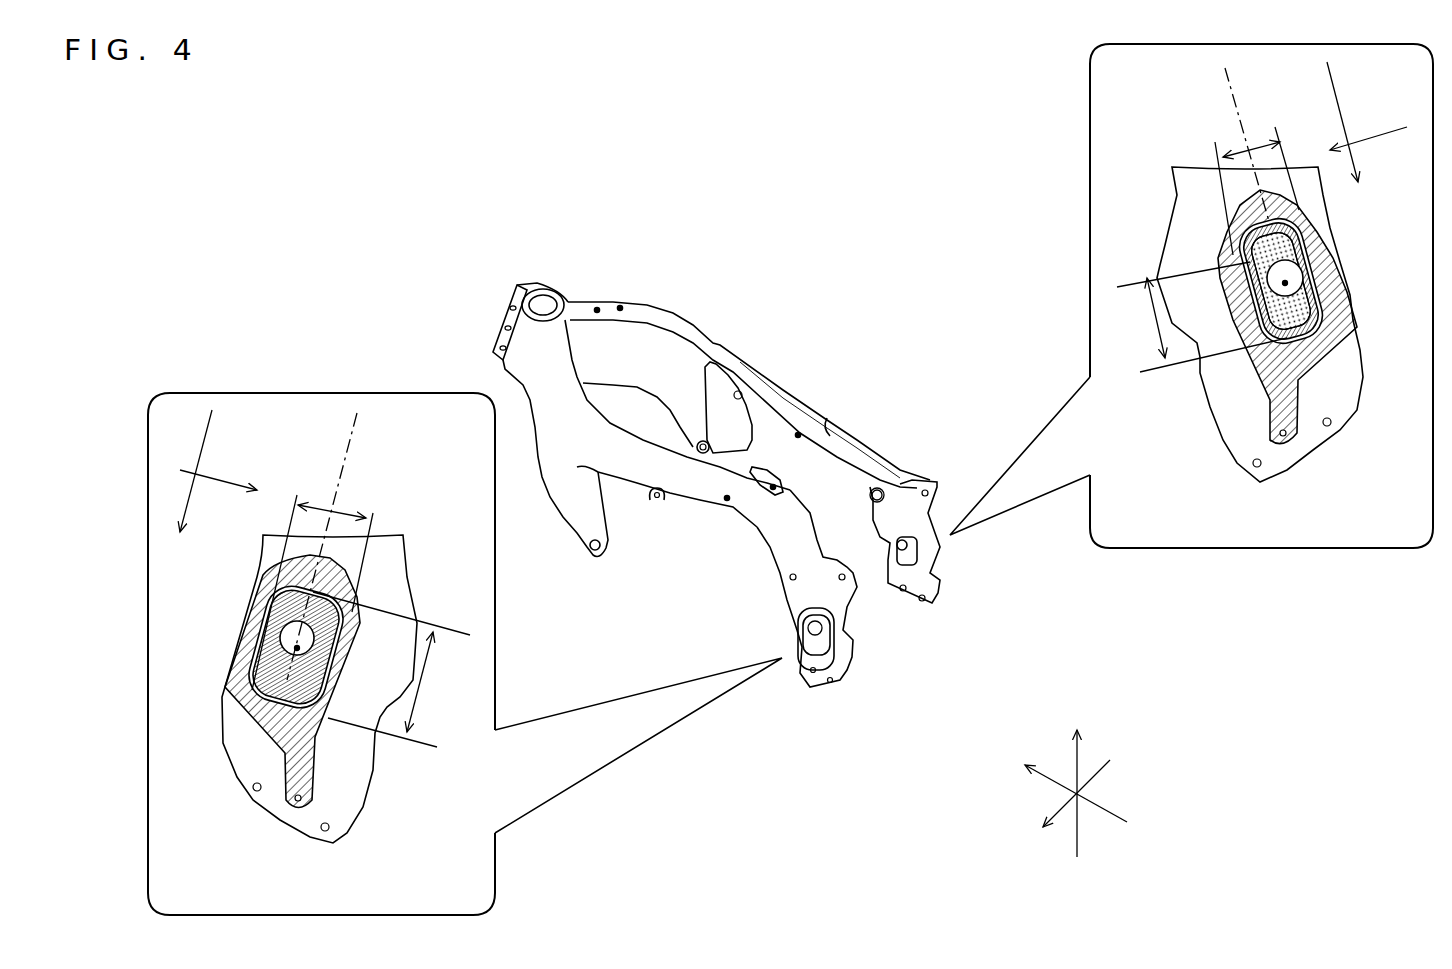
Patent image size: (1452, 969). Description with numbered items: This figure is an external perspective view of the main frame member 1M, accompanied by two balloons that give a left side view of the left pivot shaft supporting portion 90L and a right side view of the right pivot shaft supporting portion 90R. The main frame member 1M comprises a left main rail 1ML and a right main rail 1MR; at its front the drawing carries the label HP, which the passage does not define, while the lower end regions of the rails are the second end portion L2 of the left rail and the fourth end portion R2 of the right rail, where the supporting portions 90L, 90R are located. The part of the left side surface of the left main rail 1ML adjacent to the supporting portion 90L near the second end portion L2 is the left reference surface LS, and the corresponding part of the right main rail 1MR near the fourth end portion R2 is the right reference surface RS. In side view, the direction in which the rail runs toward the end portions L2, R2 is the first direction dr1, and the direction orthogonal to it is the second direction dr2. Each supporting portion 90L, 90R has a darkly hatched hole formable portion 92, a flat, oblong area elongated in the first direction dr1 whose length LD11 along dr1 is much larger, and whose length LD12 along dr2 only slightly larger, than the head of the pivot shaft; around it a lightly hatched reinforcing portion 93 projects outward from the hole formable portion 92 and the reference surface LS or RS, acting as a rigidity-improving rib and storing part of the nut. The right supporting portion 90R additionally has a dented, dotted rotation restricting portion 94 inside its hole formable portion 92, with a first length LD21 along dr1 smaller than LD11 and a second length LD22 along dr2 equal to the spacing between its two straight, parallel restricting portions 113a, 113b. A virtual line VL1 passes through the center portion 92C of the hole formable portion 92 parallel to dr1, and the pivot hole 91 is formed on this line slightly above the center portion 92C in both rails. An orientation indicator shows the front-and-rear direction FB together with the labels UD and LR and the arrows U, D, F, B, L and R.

The main frame member 1M is at (793, 313).
The right main rail 1MR is at (676, 307).
The left main rail 1ML is at (636, 469).
The head pipe HP is at (517, 335).
The left pivot shaft supporting portion 90L is at (793, 645).
The right pivot shaft supporting portion 90R is at (930, 547).
The pivot hole 91 is at (884, 496).
The hole formable portion 92 is at (267, 682).
The center portion 92C is at (297, 648).
The reinforcing portion 93 is at (307, 735).
The rotation restricting portion 94 is at (1338, 322).
The restricting portion 113a is at (1267, 400).
The restricting portion 113b is at (1307, 230).
The second end portion L2 is at (843, 685).
The fourth end portion R2 is at (938, 593).
The left reference surface LS is at (362, 683).
The right reference surface RS is at (1186, 313).
The first direction dr1 is at (203, 440).
The second direction dr2 is at (220, 485).
The virtual line VL1 is at (345, 457).
The length in the first direction of the hole formable portion LD11 is at (397, 669).
The length in the second direction of the hole formable portion LD12 is at (329, 585).
The first length LD21 is at (1192, 317).
The second length LD22 is at (1243, 152).
The up-down direction UD is at (1075, 762).
The left-right direction LR is at (1097, 777).
The front-and-rear direction FB is at (1093, 808).
The up U is at (1080, 714).
The down D is at (1080, 879).
The front F is at (1012, 760).
The back B is at (1150, 838).
The left L is at (1024, 847).
The right R is at (1123, 750).